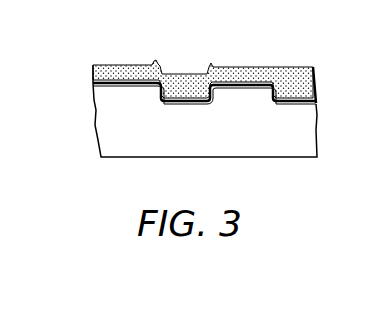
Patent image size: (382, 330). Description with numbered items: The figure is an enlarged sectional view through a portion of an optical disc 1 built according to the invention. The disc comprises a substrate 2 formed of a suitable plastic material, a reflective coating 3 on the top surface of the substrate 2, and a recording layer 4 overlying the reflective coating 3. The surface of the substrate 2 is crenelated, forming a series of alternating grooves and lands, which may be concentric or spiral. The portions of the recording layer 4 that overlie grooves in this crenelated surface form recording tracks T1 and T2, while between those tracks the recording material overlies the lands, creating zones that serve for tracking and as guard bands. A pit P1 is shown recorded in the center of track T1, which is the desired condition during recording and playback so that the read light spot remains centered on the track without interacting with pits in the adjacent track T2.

The optical disc 1 is at (123, 52).
The substrate 2 is at (95, 118).
The reflective coating 3 is at (93, 84).
The recording layer 4 is at (93, 80).
The pit P1 is at (195, 70).
The recording track T1 is at (187, 104).
The recording track T2 is at (290, 104).